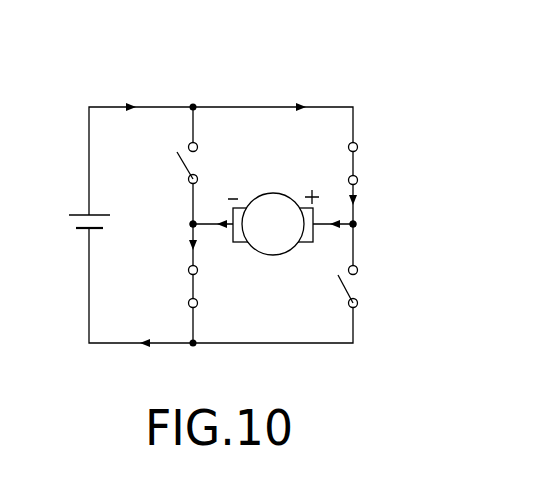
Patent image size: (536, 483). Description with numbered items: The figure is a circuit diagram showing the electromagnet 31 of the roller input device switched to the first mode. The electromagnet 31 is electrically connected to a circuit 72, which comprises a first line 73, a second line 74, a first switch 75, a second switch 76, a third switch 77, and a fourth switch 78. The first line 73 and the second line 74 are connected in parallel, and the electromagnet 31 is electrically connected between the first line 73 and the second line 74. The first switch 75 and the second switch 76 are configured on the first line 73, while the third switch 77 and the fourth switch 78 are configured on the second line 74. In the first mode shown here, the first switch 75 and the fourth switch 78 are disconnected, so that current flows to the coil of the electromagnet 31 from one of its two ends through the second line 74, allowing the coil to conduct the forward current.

The circuit 72 is at (88, 80).
The electromagnet 31 is at (272, 207).
The first line 73 is at (185, 203).
The second line 74 is at (357, 245).
The first switch 75 is at (178, 168).
The second switch 76 is at (188, 288).
The third switch 77 is at (356, 162).
The fourth switch 78 is at (347, 288).